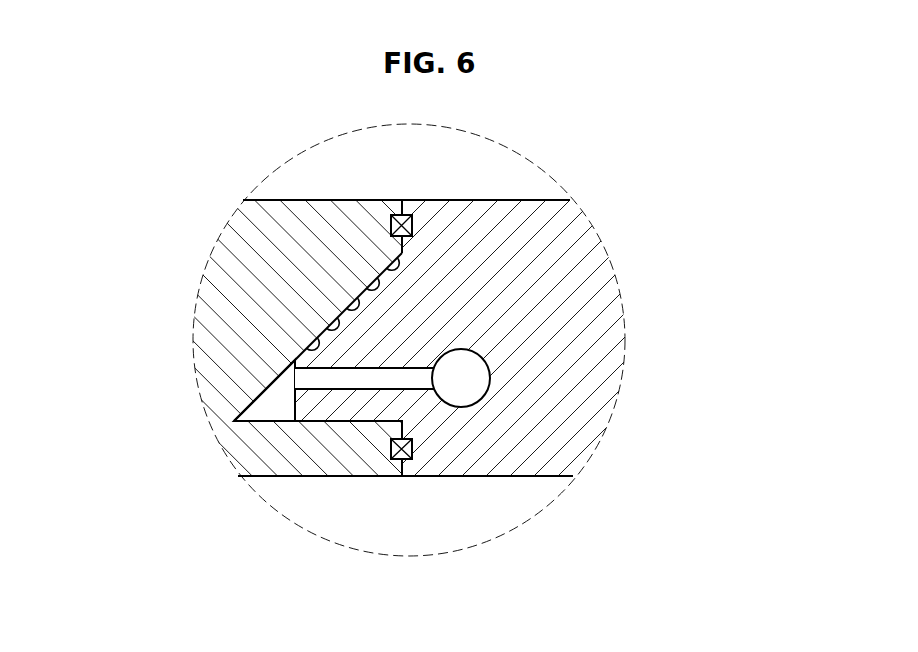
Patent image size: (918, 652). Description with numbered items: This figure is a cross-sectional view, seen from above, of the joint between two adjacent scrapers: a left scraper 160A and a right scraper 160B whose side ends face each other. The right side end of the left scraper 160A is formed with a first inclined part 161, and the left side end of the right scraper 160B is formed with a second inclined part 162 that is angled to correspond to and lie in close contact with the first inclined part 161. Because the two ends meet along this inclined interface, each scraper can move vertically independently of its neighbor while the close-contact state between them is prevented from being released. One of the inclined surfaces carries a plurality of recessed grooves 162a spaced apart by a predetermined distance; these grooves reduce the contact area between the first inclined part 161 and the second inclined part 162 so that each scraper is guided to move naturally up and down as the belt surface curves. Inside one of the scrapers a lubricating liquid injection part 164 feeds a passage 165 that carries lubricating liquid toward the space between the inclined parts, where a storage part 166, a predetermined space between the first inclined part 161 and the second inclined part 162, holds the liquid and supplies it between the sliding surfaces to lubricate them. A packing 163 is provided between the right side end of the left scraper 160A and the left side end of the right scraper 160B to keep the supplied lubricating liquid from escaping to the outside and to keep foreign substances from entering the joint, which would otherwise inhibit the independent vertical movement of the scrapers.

The left scraper 160A is at (204, 300).
The right scraper 160B is at (612, 333).
The first inclined part 161 is at (282, 376).
The second inclined part 162 is at (356, 296).
The recessed grooves 162a is at (340, 332).
The packing 163 is at (401, 214).
The lubricating liquid injection part 164 is at (458, 392).
The passage 165 is at (331, 381).
The storage part 166 is at (270, 405).